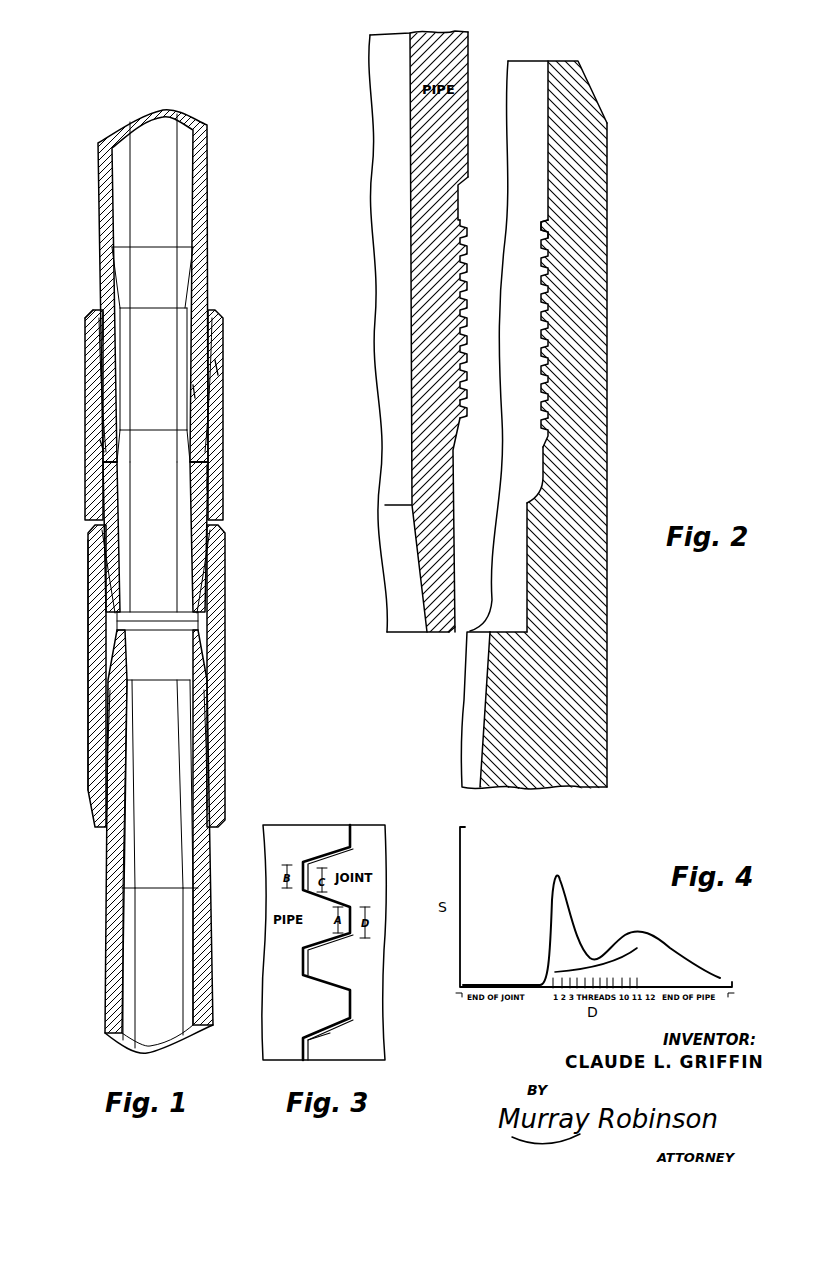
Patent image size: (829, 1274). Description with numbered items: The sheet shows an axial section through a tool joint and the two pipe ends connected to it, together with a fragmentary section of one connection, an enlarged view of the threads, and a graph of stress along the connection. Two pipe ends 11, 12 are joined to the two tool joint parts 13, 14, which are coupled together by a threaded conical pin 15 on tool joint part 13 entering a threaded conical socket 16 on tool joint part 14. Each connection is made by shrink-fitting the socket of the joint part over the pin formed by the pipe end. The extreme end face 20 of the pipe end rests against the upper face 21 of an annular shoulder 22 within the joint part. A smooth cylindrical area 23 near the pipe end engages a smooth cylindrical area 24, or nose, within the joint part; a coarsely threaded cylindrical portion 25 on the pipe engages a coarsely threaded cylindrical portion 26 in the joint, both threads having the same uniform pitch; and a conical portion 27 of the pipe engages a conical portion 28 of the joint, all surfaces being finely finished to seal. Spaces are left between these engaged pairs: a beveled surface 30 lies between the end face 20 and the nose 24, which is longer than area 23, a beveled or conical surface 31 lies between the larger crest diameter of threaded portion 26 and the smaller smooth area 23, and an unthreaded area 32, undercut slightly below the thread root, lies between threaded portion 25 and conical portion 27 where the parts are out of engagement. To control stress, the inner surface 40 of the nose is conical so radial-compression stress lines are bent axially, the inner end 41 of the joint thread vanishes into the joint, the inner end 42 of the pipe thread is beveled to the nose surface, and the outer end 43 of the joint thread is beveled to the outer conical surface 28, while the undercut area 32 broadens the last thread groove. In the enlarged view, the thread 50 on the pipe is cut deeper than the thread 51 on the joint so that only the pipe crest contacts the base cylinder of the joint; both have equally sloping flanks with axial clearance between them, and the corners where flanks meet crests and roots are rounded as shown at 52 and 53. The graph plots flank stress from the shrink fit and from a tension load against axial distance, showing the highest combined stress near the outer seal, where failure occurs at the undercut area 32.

In FIG. 1, the pipe end 11 is at (98, 192).
In FIG. 1, the pipe end 12 is at (105, 930).
In FIG. 1, the tool joint part 13 is at (80, 406).
In FIG. 1, the tool joint part 14 is at (87, 667).
In FIG. 1, the threaded conical pin 15 is at (127, 551).
In FIG. 1, the threaded conical socket 16 is at (83, 632).
In FIG. 1, the extreme end face 20 is at (204, 449).
In FIG. 2, the extreme end face 20 is at (420, 633).
In FIG. 1, the upper face 21 is at (208, 470).
In FIG. 2, the upper face 21 is at (516, 638).
In FIG. 1, the annular shoulder 22 is at (208, 478).
In FIG. 2, the annular shoulder 22 is at (491, 660).
In FIG. 1, the smooth cylindrical area 23 is at (110, 453).
In FIG. 2, the smooth cylindrical area 23 is at (529, 580).
In FIG. 1, the smooth cylindrical area 24 is at (99, 446).
In FIG. 2, the smooth cylindrical area 24 is at (455, 552).
In FIG. 1, the coarsely threaded cylindrical portion 25 is at (196, 392).
In FIG. 2, the coarsely threaded cylindrical portion 25 is at (458, 340).
In FIG. 1, the coarsely threaded cylindrical portion 26 is at (217, 370).
In FIG. 2, the coarsely threaded cylindrical portion 26 is at (560, 352).
In FIG. 1, the conical portion 27 is at (102, 330).
In FIG. 2, the conical portion 27 is at (468, 110).
In FIG. 1, the conical portion 28 is at (90, 345).
In FIG. 2, the conical portion 28 is at (548, 147).
In FIG. 2, the beveled surface 30 is at (452, 633).
In FIG. 2, the beveled or conical surface 31 is at (541, 500).
In FIG. 2, the unthreaded area 32 is at (459, 200).
In FIG. 2, the inner surface 40 is at (397, 552).
In FIG. 2, the inner end of the thread on the tool joint part 41 is at (549, 447).
In FIG. 2, the inner end of the thread on the pipe end 42 is at (465, 408).
In FIG. 2, the outer end of the thread on the tool joint part 43 is at (543, 237).
In FIG. 3, the thread on the pipe 50 is at (320, 1027).
In FIG. 3, the thread on the joint 51 is at (320, 1036).
In FIG. 3, the rounded corner 52 is at (305, 950).
In FIG. 3, the rounded corner 53 is at (312, 956).